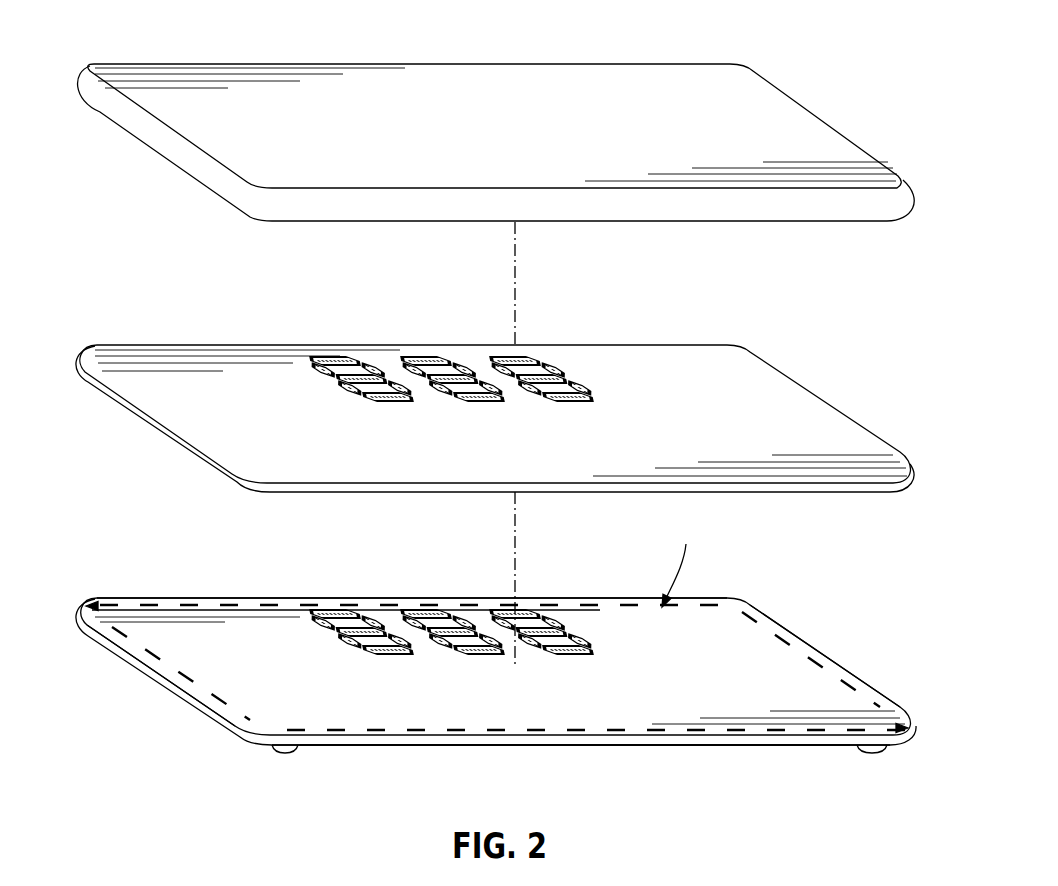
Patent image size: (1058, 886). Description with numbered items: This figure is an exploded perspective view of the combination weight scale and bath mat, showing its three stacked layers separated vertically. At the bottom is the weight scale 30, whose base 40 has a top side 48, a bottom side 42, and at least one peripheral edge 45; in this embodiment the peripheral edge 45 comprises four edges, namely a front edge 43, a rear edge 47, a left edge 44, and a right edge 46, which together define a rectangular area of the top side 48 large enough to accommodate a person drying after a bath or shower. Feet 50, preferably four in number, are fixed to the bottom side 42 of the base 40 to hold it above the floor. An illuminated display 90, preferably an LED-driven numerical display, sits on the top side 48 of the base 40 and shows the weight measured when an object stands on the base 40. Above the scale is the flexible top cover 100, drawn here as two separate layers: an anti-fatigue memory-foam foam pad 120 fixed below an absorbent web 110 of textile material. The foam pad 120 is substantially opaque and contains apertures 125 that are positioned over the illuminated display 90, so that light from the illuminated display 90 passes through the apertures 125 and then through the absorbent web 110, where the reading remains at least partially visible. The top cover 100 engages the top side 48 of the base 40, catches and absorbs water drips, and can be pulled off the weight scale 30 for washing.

The flexible top cover 100 is at (496, 120).
The absorbent web 110 is at (518, 132).
The foam pad 120 is at (495, 400).
The apertures 125 is at (577, 382).
The weight scale 30 is at (501, 667).
The base 40 is at (713, 612).
The bottom side 42 is at (598, 752).
The front edge 43 is at (737, 740).
The left edge 44 is at (90, 638).
The peripheral edge 45 is at (496, 672).
The right edge 46 is at (856, 670).
The rear edge 47 is at (212, 598).
The top side 48 is at (674, 698).
The feet 50 is at (286, 754).
The illuminated display 90 is at (586, 614).